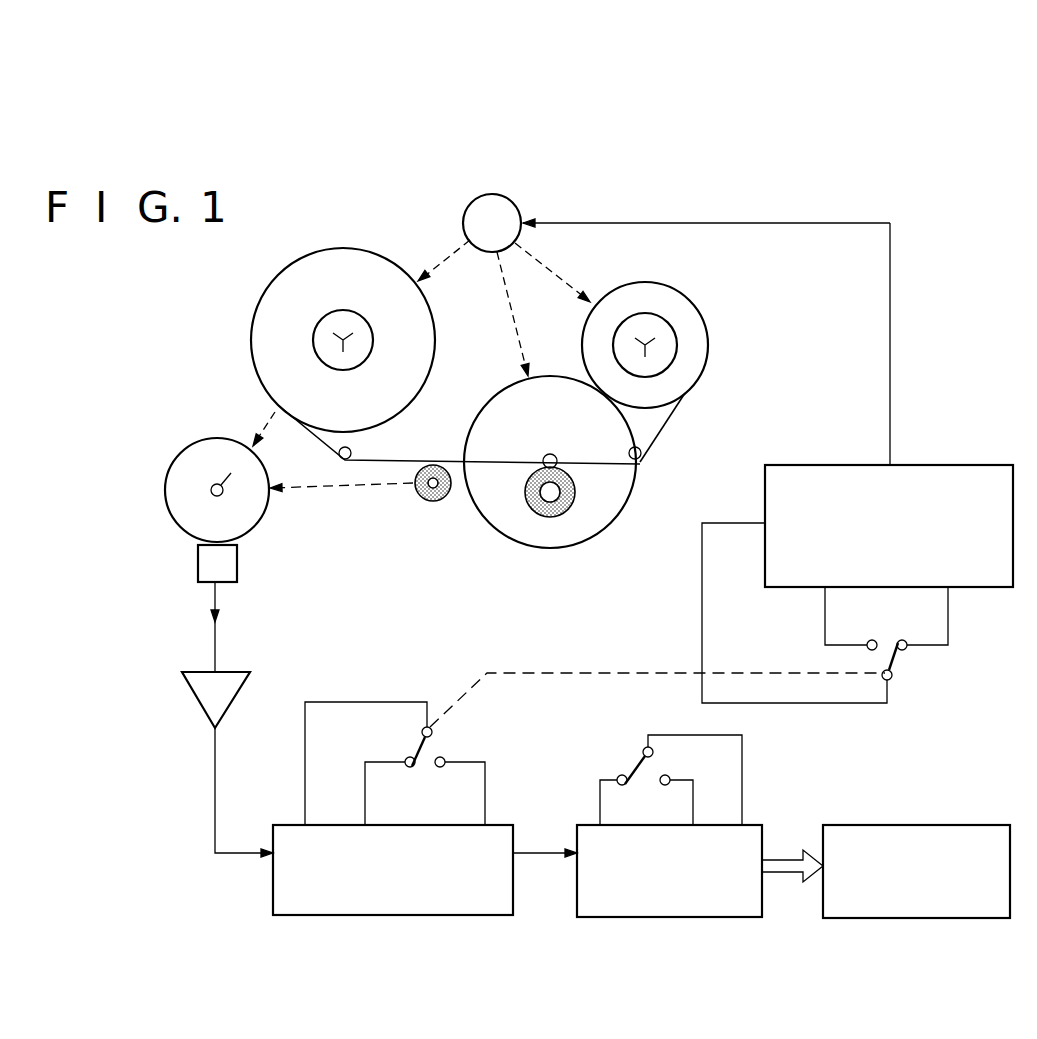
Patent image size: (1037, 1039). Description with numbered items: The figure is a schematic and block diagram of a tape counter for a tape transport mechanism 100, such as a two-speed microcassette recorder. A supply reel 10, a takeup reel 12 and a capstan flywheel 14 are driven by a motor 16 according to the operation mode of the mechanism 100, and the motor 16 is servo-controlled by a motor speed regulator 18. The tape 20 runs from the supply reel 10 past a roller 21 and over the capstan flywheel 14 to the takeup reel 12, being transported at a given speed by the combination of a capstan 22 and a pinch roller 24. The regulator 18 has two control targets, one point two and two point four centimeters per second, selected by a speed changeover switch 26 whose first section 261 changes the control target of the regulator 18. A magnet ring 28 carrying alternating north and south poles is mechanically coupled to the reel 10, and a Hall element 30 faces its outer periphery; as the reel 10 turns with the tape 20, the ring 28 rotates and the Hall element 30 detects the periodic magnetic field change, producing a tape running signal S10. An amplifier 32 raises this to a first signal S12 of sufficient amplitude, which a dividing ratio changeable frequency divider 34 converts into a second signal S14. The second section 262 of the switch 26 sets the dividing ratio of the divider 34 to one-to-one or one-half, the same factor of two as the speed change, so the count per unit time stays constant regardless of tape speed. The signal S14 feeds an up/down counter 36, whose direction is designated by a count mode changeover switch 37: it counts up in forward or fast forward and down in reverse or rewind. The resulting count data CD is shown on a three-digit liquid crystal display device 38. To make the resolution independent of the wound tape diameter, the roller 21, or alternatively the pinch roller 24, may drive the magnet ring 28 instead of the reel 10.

The tape transport mechanism 100 is at (250, 253).
The supply reel 10 is at (316, 330).
The takeup reel 12 is at (676, 332).
The capstan flywheel 14 is at (500, 523).
The motor 16 is at (516, 204).
The motor speed regulator 18 is at (970, 482).
The tape 20 is at (390, 463).
The roller 21 is at (428, 502).
The capstan 22 is at (552, 452).
The pinch roller 24 is at (562, 516).
The speed changeover switch 26 is at (584, 676).
The speed changeover switch 261 is at (895, 672).
The dividing ratio switch 262 is at (432, 730).
The magnet ring 28 is at (186, 446).
The Hall element 30 is at (237, 563).
The amplifier 32 is at (205, 706).
The dividing ratio changeable frequency divider 34 is at (505, 900).
The up/down counter 36 is at (752, 905).
The count mode changeover switch 37 is at (645, 746).
The liquid crystal display device 38 is at (998, 905).
The tape running signal S10 is at (220, 624).
The first signal S12 is at (213, 802).
The second signal S14 is at (540, 848).
The count data CD is at (784, 858).